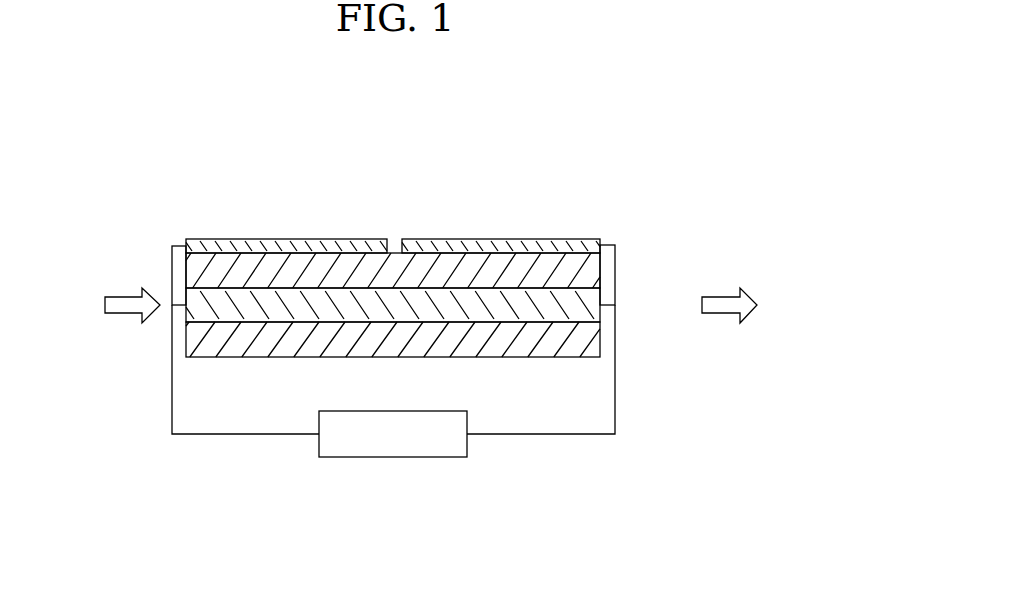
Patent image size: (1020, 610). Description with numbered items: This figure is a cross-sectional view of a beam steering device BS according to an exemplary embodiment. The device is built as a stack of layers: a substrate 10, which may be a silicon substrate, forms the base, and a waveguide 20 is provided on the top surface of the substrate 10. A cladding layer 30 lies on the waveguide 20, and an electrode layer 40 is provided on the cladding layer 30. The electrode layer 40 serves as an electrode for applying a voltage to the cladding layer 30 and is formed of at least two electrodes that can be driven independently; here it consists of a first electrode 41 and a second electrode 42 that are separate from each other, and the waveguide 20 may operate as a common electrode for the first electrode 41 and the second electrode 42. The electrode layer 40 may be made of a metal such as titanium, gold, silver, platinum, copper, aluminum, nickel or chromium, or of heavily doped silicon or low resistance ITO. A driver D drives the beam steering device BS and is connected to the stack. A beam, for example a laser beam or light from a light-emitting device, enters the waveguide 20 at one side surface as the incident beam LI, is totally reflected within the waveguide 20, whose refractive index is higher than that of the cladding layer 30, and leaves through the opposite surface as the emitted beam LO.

The substrate 10 is at (600, 342).
The waveguide 20 is at (600, 309).
The cladding layer 30 is at (600, 272).
The electrode layer 40 is at (432, 214).
The first electrode 41 is at (287, 239).
The second electrode 42 is at (500, 239).
The beam steering device BS is at (604, 196).
The driver D is at (393, 458).
The incident beam LI is at (116, 305).
The emitted beam LO is at (749, 305).